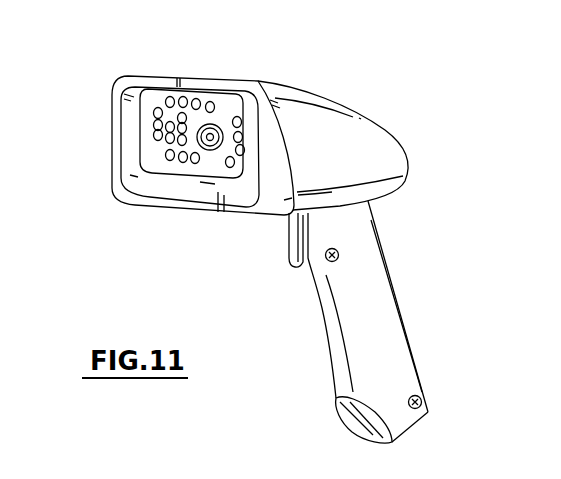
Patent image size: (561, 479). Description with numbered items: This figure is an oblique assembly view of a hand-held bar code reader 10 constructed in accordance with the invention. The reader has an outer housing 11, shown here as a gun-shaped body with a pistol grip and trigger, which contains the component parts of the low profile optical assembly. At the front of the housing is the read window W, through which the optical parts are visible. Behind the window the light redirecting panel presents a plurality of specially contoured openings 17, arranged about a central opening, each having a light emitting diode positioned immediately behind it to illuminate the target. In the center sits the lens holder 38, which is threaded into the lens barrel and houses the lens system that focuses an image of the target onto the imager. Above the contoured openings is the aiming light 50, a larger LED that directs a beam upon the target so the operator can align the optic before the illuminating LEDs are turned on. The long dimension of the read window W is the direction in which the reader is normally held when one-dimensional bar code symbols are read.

The hand-held bar code reader 10 is at (405, 110).
The outer housing 11 is at (312, 90).
The contoured openings 17 is at (153, 135).
The lens holder 38 is at (207, 166).
The aiming light 50 is at (212, 100).
The read window W is at (163, 168).